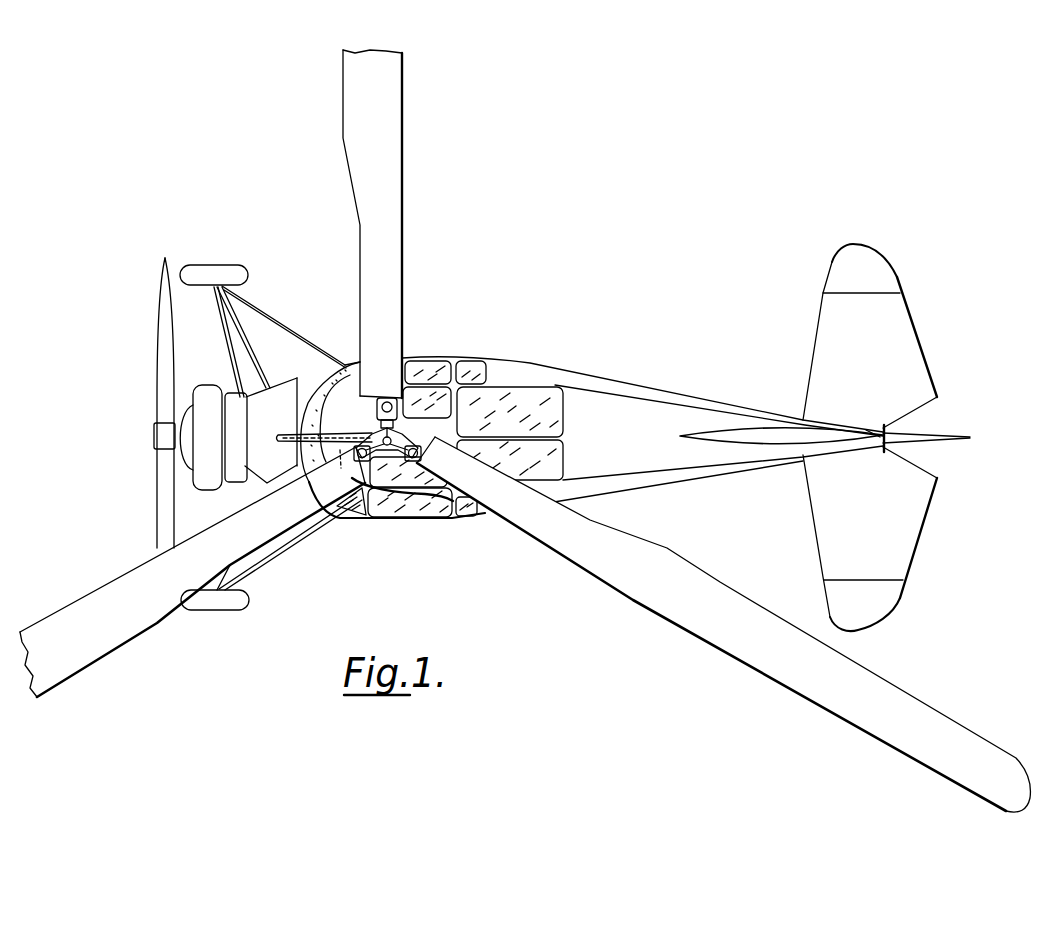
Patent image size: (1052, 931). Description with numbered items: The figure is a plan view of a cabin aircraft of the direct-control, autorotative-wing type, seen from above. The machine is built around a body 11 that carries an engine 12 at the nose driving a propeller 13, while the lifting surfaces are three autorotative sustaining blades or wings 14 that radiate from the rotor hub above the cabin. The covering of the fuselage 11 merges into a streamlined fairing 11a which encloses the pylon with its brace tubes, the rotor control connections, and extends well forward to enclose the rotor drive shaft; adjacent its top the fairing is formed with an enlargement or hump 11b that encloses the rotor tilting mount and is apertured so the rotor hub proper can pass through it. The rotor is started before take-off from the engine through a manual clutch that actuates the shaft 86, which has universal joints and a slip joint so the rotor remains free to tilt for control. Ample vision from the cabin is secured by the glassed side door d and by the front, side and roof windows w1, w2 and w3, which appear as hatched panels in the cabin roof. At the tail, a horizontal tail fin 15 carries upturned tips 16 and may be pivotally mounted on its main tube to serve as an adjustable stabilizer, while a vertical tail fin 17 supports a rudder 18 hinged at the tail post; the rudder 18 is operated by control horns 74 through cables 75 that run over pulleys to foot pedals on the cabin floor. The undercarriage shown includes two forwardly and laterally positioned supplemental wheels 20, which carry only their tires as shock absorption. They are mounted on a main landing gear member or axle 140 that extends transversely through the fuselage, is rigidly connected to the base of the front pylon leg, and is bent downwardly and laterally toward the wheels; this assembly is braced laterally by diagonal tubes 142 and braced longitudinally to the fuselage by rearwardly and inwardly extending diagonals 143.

The body 11 is at (565, 374).
The fairing 11a is at (290, 433).
The hump 11b is at (374, 428).
The engine 12 is at (208, 393).
The propeller 13 is at (157, 355).
The autorotative sustaining blades 14 is at (398, 172).
The horizontal tail fin 15 is at (917, 513).
The upturned tips 16 is at (885, 270).
The vertical tail fin 17 is at (742, 430).
The rudder 18 is at (946, 437).
The supplemental wheels 20 is at (212, 266).
The control horns 74 is at (883, 425).
The cables 75 is at (862, 428).
The shaft 86 is at (340, 462).
The main landing gear member 140 is at (249, 348).
The diagonal tubes 142 is at (222, 340).
The diagonals 143 is at (300, 537).
The front window w1 is at (348, 372).
The side window w2 is at (470, 366).
The roof window w3 is at (438, 407).
The glassed side door d is at (420, 359).